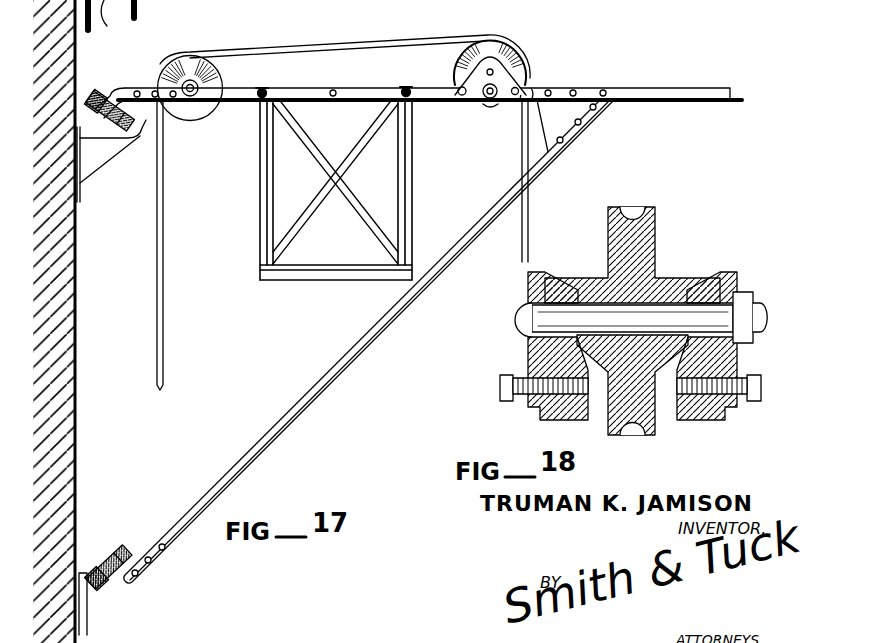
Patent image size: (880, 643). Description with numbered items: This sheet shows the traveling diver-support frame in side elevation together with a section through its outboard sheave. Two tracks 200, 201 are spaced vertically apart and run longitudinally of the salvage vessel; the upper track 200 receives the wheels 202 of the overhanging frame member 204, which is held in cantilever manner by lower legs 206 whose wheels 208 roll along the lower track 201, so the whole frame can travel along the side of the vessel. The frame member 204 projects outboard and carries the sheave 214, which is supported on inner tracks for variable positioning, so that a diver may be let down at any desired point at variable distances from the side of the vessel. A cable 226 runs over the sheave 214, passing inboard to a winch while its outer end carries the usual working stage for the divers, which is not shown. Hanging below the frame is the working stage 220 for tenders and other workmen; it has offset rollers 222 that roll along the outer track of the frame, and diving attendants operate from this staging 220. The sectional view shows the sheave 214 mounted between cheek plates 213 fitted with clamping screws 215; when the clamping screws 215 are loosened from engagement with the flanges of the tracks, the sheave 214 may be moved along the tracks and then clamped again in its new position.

In FIG. 17, the track 200 is at (116, 150).
In FIG. 17, the track 201 is at (83, 575).
In FIG. 17, the wheels 202 is at (84, 103).
In FIG. 17, the overhanging frame member 204 is at (350, 97).
In FIG. 17, the lower legs 206 is at (338, 383).
In FIG. 17, the wheels 208 is at (123, 553).
In FIG. 18, the cheek plates 213 is at (540, 343).
In FIG. 17, the sheave 214 is at (497, 42).
In FIG. 18, the sheave 214 is at (647, 240).
In FIG. 18, the clamping screws 215 is at (500, 385).
In FIG. 17, the hanging working stage 220 is at (413, 184).
In FIG. 17, the offset rollers 222 is at (263, 88).
In FIG. 17, the cable 226 is at (250, 52).